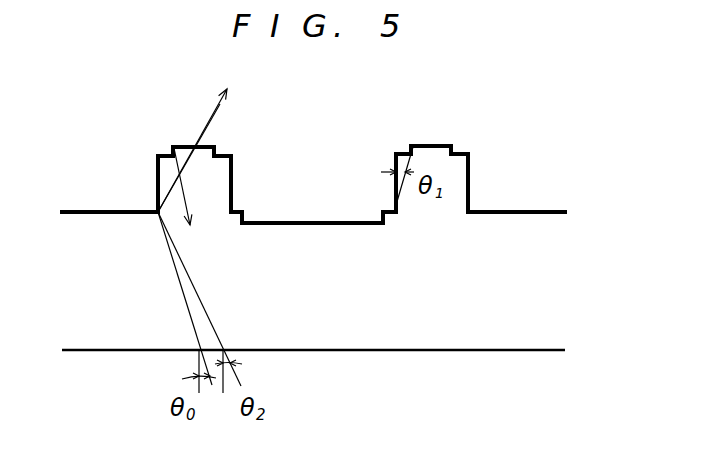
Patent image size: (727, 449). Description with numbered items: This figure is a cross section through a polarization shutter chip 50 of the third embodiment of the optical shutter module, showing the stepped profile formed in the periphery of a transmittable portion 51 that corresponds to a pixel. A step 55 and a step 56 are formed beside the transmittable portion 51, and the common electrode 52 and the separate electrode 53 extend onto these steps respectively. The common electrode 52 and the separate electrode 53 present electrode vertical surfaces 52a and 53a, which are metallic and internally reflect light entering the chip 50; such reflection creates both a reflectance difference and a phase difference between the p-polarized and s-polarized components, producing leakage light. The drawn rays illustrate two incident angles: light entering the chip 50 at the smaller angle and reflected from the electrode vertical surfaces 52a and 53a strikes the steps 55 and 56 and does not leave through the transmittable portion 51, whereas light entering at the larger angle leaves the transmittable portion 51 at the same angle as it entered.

The polarization shutter chip 50 is at (490, 350).
The transmittable portion 51 is at (194, 147).
The common electrode 52 is at (336, 222).
The electrode vertical surface 52a is at (232, 187).
The separate electrode 53 is at (103, 211).
The electrode vertical surface 53a is at (157, 167).
The step 55 is at (228, 153).
The step 56 is at (158, 156).